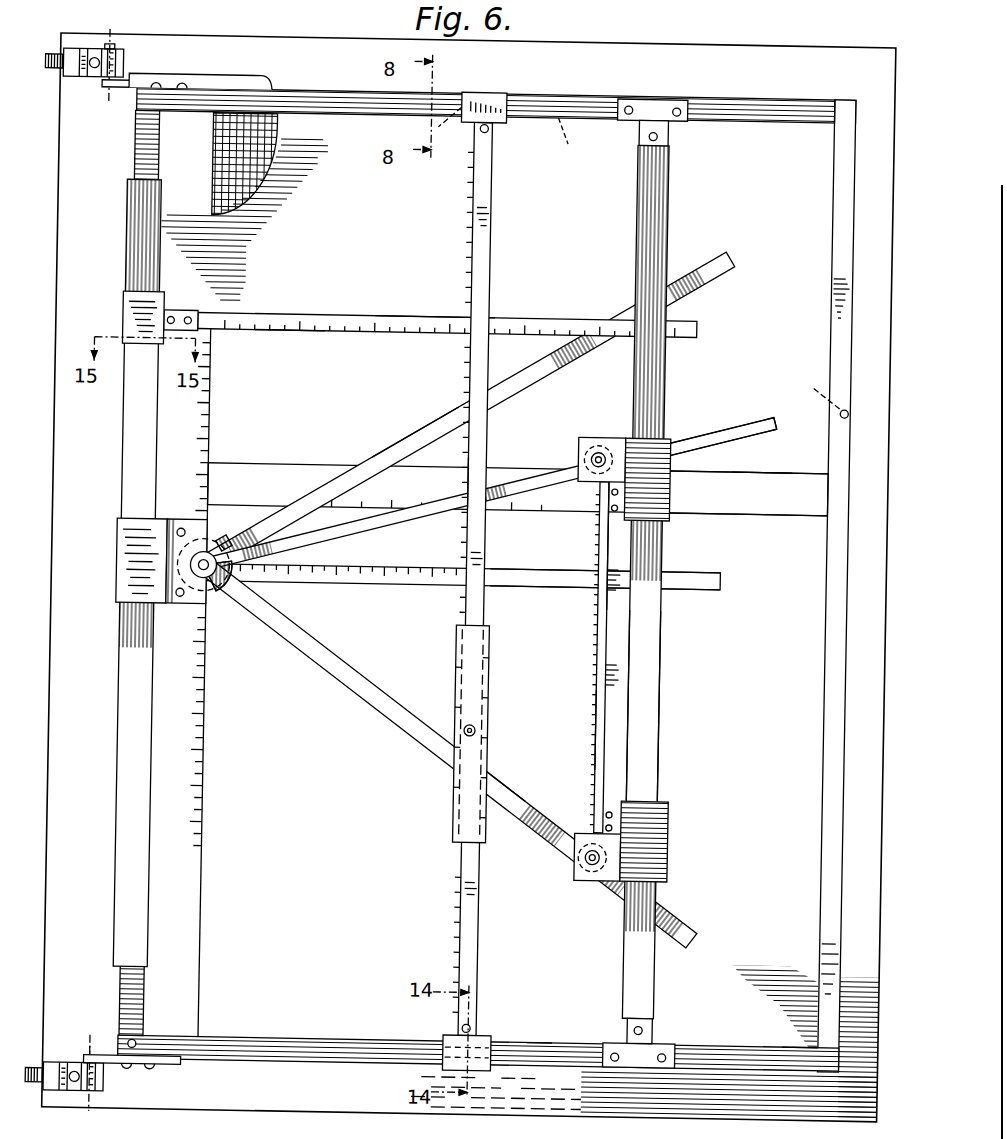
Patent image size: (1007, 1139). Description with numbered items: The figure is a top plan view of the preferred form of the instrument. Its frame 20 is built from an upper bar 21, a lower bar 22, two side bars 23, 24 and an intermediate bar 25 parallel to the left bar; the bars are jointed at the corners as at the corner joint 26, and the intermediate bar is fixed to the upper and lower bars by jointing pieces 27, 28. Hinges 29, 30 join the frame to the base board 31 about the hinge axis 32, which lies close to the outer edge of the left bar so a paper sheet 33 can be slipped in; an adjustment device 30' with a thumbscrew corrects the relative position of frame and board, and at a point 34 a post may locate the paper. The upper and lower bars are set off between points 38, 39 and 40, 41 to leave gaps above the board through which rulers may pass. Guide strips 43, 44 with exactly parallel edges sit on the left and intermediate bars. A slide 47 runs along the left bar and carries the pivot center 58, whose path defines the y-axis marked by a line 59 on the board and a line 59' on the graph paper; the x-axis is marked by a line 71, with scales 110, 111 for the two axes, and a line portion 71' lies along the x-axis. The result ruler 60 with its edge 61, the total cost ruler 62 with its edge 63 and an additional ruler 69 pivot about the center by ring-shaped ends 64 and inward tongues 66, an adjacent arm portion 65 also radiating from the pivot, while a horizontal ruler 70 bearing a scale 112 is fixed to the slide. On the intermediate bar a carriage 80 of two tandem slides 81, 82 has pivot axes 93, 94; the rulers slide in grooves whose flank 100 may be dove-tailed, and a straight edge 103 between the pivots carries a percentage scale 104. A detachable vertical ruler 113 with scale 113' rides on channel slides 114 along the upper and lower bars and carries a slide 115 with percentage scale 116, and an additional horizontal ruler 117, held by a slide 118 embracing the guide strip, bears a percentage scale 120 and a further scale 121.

The frame 20 is at (620, 82).
The upper bar 21 is at (342, 95).
The lower bar 22 is at (352, 1034).
The side bar 23 is at (137, 162).
The side bar 24 is at (837, 210).
The intermediate bar 25 is at (640, 182).
The corner joint 26 is at (146, 1042).
The jointing piece 27 is at (680, 90).
The jointing piece 28 is at (640, 1052).
The hinge 29 is at (185, 78).
The hinge 30 is at (132, 1076).
The adjustment device 30' is at (63, 1087).
The base board 31 is at (806, 40).
The hinge axis 32 is at (104, 1042).
The sheet of drawing paper 33 is at (262, 72).
The point for upright post 34 is at (452, 92).
The set-off point 38 is at (571, 143).
The set-off point 39 is at (828, 98).
The set-off point 40 is at (560, 1036).
The set-off point 41 is at (830, 1040).
The guide strip 43 is at (157, 873).
The guide strip 44 is at (671, 660).
The slide 47 is at (126, 560).
The pivot center 58 is at (236, 536).
The y-axis line 59 is at (448, 309).
The y-axis line on paper 59' is at (244, 207).
The result ruler 60 is at (745, 418).
The ruling edge 61 is at (548, 470).
The total cost ruler 62 is at (540, 812).
The ruling edge 63 is at (355, 682).
The ring-shaped end 64 is at (222, 594).
The upper arm 65 is at (272, 520).
The tongue 66 is at (250, 548).
The additional ruler 69 is at (422, 432).
The horizontal ruler 70 is at (544, 562).
The x-axis line 71 is at (748, 494).
The bar edge 71' is at (767, 453).
The carriage 80 is at (598, 660).
The slide 81 is at (672, 486).
The slide 82 is at (682, 826).
The pivot axis 93 is at (608, 436).
The pivot axis 94 is at (606, 860).
The groove flank 100 is at (612, 636).
The straight edge 103 is at (573, 707).
The percentage scale 104 is at (604, 712).
The x-axis scale 110 is at (256, 500).
The y-axis scale 111 is at (220, 438).
The scale 112 is at (338, 562).
The vertical ruler 113 is at (472, 578).
The scale 113' is at (440, 481).
The channel-shaped slide 114 is at (508, 92).
The slide 115 is at (492, 730).
The percentage scale 116 is at (467, 672).
The horizontal ruler 117 is at (412, 313).
The slide 118 is at (128, 315).
The percentage scale 120 is at (298, 316).
The scale 121 is at (266, 328).